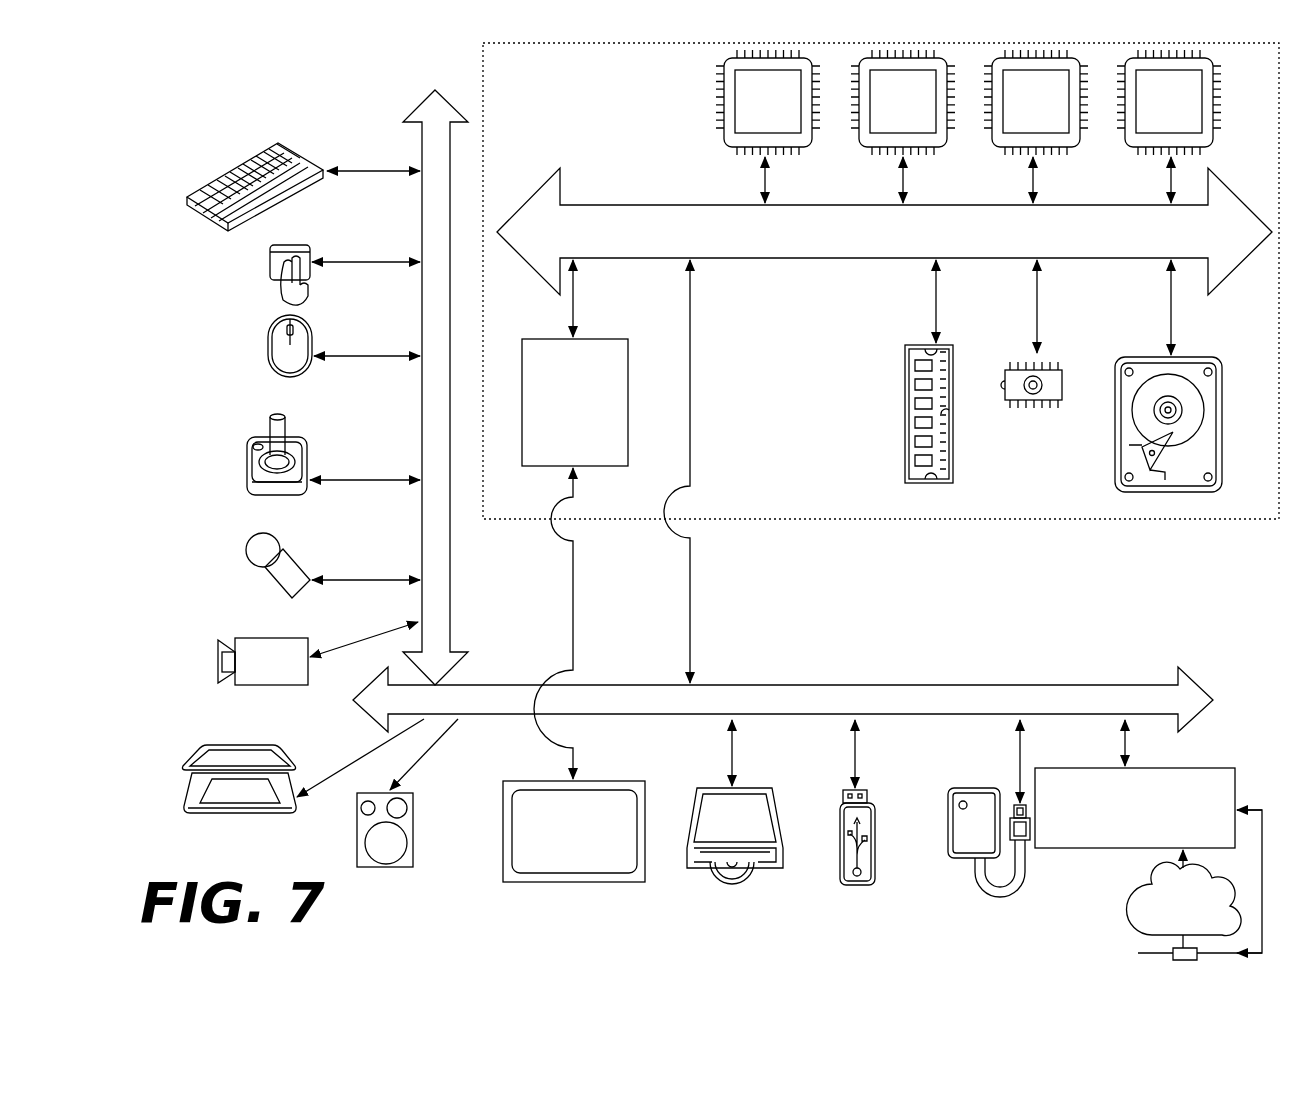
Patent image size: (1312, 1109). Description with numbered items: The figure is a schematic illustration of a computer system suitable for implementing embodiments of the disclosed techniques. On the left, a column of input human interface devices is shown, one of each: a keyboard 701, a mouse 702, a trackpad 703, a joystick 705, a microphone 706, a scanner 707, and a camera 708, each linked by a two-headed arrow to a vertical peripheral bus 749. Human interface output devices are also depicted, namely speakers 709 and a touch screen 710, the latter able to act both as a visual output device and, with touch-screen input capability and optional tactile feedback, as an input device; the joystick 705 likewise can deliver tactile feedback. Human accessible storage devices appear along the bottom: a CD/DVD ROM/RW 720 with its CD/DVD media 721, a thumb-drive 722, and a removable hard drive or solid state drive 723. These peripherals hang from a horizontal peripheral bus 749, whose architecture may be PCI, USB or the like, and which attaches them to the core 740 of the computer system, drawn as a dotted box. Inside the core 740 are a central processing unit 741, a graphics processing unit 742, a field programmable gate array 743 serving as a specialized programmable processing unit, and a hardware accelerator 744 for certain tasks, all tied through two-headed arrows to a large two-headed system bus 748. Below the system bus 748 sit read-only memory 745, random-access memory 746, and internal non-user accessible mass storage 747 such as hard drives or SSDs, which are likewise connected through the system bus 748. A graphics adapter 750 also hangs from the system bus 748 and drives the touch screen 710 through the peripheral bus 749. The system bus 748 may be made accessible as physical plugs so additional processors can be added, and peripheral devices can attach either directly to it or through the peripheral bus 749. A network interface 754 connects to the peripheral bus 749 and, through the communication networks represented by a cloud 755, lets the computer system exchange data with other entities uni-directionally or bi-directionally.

The keyboard 701 is at (187, 198).
The mouse 702 is at (268, 344).
The trackpad 703 is at (270, 262).
The joystick 705 is at (248, 478).
The microphone 706 is at (247, 548).
The scanner 707 is at (186, 805).
The camera 708 is at (222, 660).
The speakers 709 is at (386, 868).
The touch screen 710 is at (573, 883).
The CD/DVD ROM/RW 720 is at (775, 870).
The CD/DVD media 721 is at (718, 878).
The thumb-drive 722 is at (857, 887).
The removable hard drive or solid state drive 723 is at (960, 860).
The core 740 is at (866, 520).
The Central Processing Unit 741 is at (768, 126).
The Graphics Processing Unit 742 is at (903, 126).
The Field Programmable Gate Array 743 is at (1036, 126).
The hardware accelerator 744 is at (1169, 126).
The Read-only memory 745 is at (1030, 410).
The Random-access memory 746 is at (905, 443).
The internal mass storage 747 is at (1127, 357).
The system bus 748 is at (884, 231).
The peripheral bus 749 is at (422, 130).
The graphics adapter 750 is at (575, 519).
The network interface 754 is at (1135, 784).
The network cloud 755 is at (1140, 925).